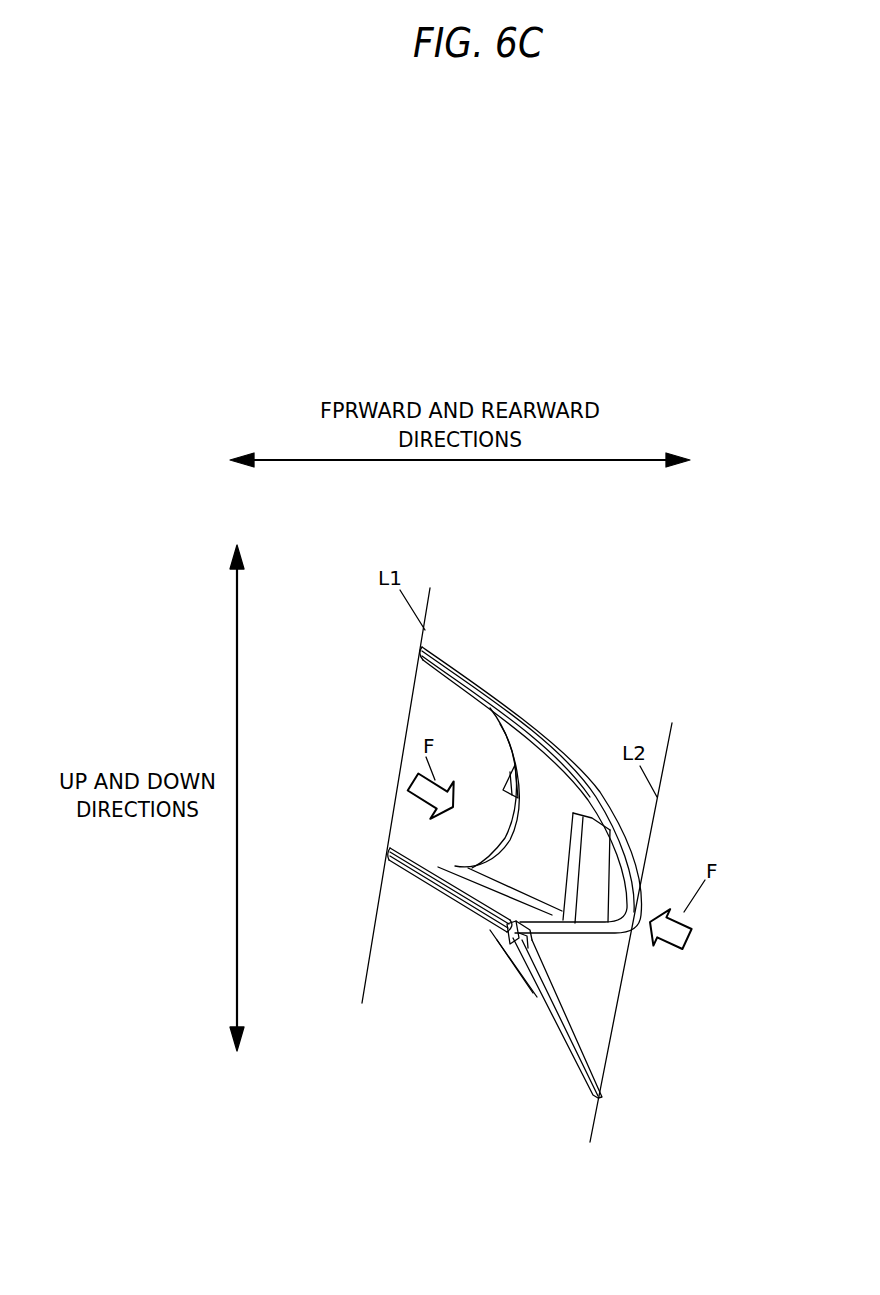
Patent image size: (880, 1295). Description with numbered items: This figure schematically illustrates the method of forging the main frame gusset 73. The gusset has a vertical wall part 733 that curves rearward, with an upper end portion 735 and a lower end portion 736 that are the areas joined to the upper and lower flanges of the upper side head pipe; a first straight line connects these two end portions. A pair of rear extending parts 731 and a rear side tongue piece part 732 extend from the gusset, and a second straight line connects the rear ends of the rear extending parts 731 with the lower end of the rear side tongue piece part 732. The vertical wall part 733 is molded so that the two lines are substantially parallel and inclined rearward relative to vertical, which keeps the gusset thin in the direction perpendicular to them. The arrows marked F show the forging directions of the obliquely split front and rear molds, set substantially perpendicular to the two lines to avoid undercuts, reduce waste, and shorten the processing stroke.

The main frame gusset 73 is at (475, 872).
The rear extending parts 731 is at (566, 762).
The rear side tongue piece part 732 is at (550, 1012).
The vertical wall part 733 is at (503, 827).
The upper end portion 735 is at (388, 852).
The lower end portion 736 is at (418, 657).